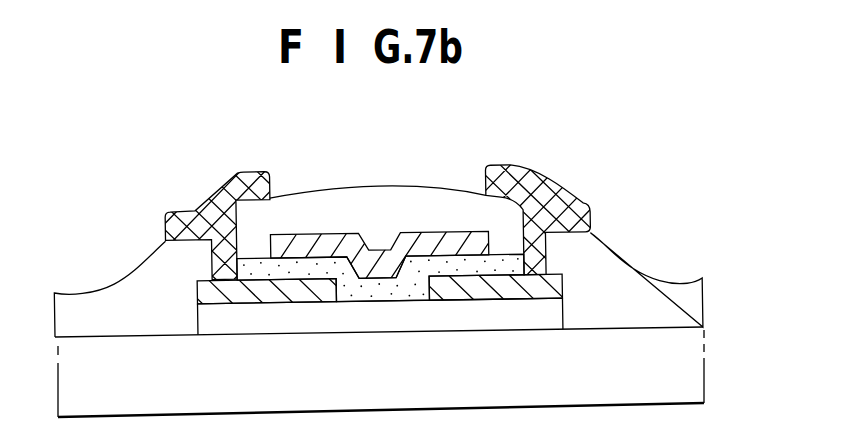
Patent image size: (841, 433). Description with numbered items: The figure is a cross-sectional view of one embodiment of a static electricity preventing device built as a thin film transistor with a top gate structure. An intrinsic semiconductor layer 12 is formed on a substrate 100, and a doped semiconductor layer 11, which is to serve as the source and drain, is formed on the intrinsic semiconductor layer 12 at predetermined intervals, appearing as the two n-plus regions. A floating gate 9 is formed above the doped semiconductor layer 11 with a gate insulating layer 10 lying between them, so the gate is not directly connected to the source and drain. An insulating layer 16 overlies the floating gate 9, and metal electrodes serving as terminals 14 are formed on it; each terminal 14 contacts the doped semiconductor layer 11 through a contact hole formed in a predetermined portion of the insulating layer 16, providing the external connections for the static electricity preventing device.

The floating gate 9 is at (448, 248).
The gate insulating layer 10 is at (317, 267).
The doped semiconductor layer 11 is at (305, 300).
The intrinsic semiconductor layer 12 is at (482, 329).
The terminals 14 is at (207, 209).
The insulating layer 16 is at (378, 223).
The substrate 100 is at (678, 363).